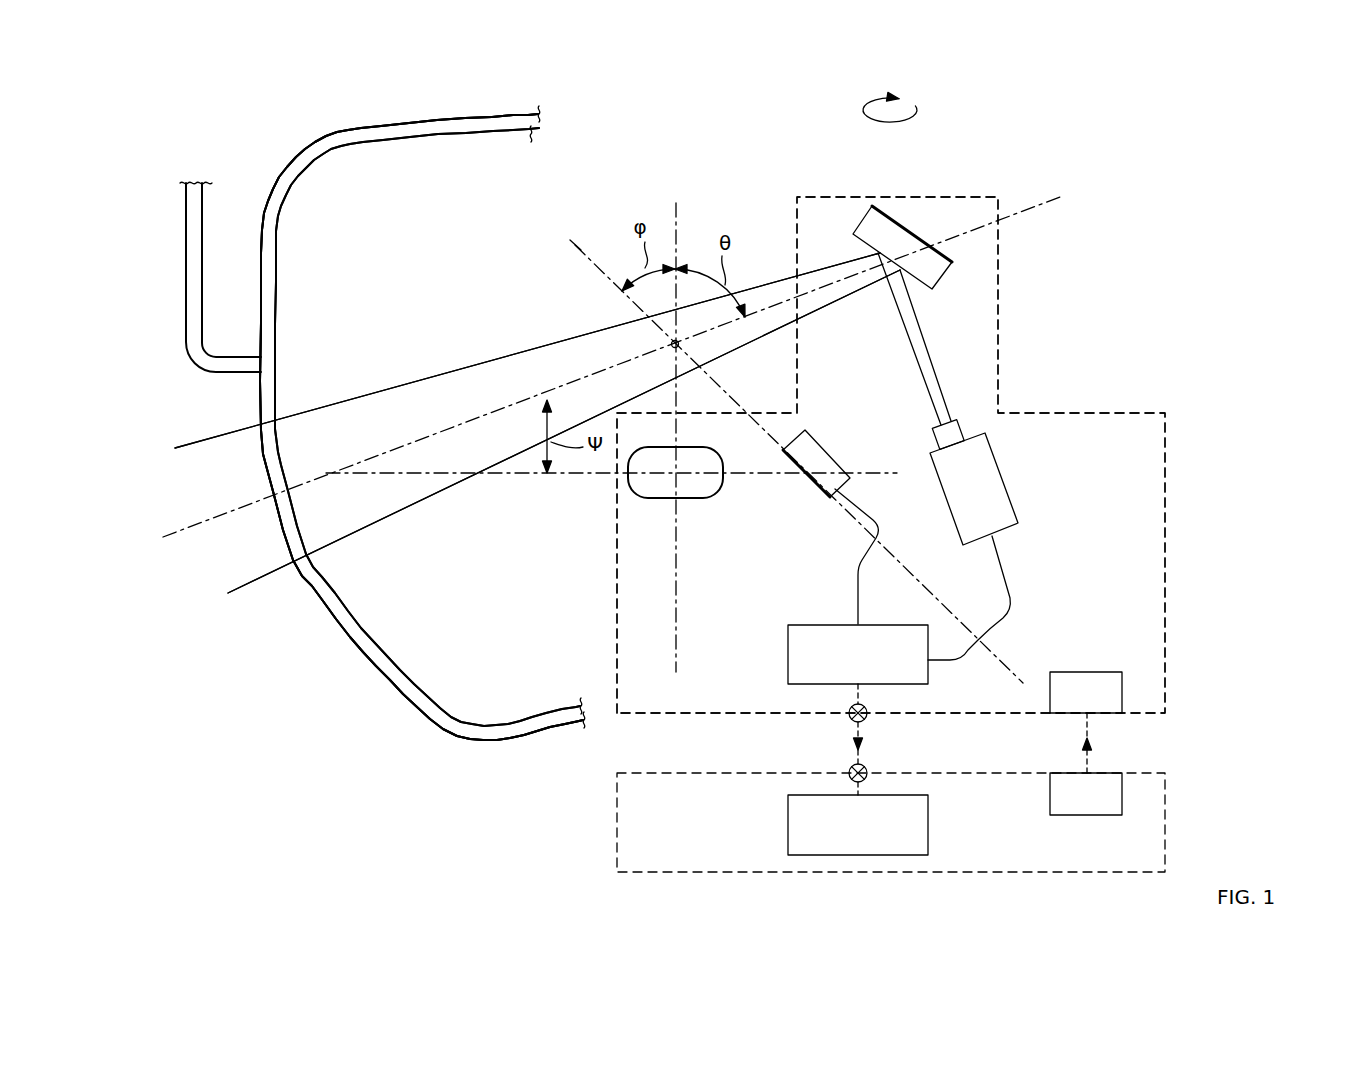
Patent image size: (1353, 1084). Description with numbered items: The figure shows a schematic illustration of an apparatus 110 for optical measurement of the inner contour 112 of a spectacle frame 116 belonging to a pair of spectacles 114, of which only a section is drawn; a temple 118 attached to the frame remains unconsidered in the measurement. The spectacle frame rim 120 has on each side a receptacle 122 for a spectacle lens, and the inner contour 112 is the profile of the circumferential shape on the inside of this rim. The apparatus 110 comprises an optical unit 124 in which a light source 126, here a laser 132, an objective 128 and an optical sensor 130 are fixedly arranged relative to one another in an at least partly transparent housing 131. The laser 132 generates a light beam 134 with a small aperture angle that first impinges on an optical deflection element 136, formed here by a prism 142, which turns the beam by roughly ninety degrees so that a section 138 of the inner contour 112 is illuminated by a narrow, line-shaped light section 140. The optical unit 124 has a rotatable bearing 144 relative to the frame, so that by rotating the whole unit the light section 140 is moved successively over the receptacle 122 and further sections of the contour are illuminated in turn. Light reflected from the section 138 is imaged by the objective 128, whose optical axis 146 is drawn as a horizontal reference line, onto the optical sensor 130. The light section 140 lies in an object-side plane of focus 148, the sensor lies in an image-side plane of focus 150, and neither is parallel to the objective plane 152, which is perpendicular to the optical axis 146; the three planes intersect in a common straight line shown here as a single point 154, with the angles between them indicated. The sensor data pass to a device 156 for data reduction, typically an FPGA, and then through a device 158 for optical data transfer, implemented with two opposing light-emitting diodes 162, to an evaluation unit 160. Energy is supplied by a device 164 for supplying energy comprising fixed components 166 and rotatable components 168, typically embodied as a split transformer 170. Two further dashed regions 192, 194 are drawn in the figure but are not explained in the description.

The apparatus 110 is at (942, 473).
The optical unit 124 is at (942, 473).
The inner contour 112 is at (418, 672).
The pair of spectacles 114 is at (330, 705).
The spectacle frame 116 is at (467, 754).
The temple 118 is at (193, 258).
The spectacle frame rim 120 is at (421, 427).
The receptacle 122 is at (283, 394).
The light source 126 is at (973, 540).
The laser 132 is at (950, 482).
The objective 128 is at (700, 499).
The optical sensor 130 is at (815, 454).
The housing 131 is at (1167, 487).
The light beam 134 is at (915, 318).
The optical deflection element 136 is at (890, 217).
The prism 142 is at (866, 220).
The section of the inner contour 138 is at (345, 505).
The light section 140 is at (580, 353).
The rotatable bearing 144 is at (918, 100).
The optical axis 146 is at (572, 478).
The object-side plane of focus 148 is at (777, 303).
The image-side plane of focus 150 is at (577, 242).
The objective plane 152 is at (680, 203).
The point 154 is at (681, 347).
The device for data reduction 156 is at (841, 665).
The device for optical data transfer 158 is at (923, 739).
The light-emitting diodes 162 is at (867, 770).
The evaluation unit 160 is at (841, 836).
The device for supplying energy 164 is at (1170, 741).
The split transformer 170 is at (1122, 693).
The fixed components 166 is at (1069, 805).
The rotatable components 168 is at (1069, 703).
The external unit 192 is at (1167, 821).
The device section 194 is at (1167, 633).